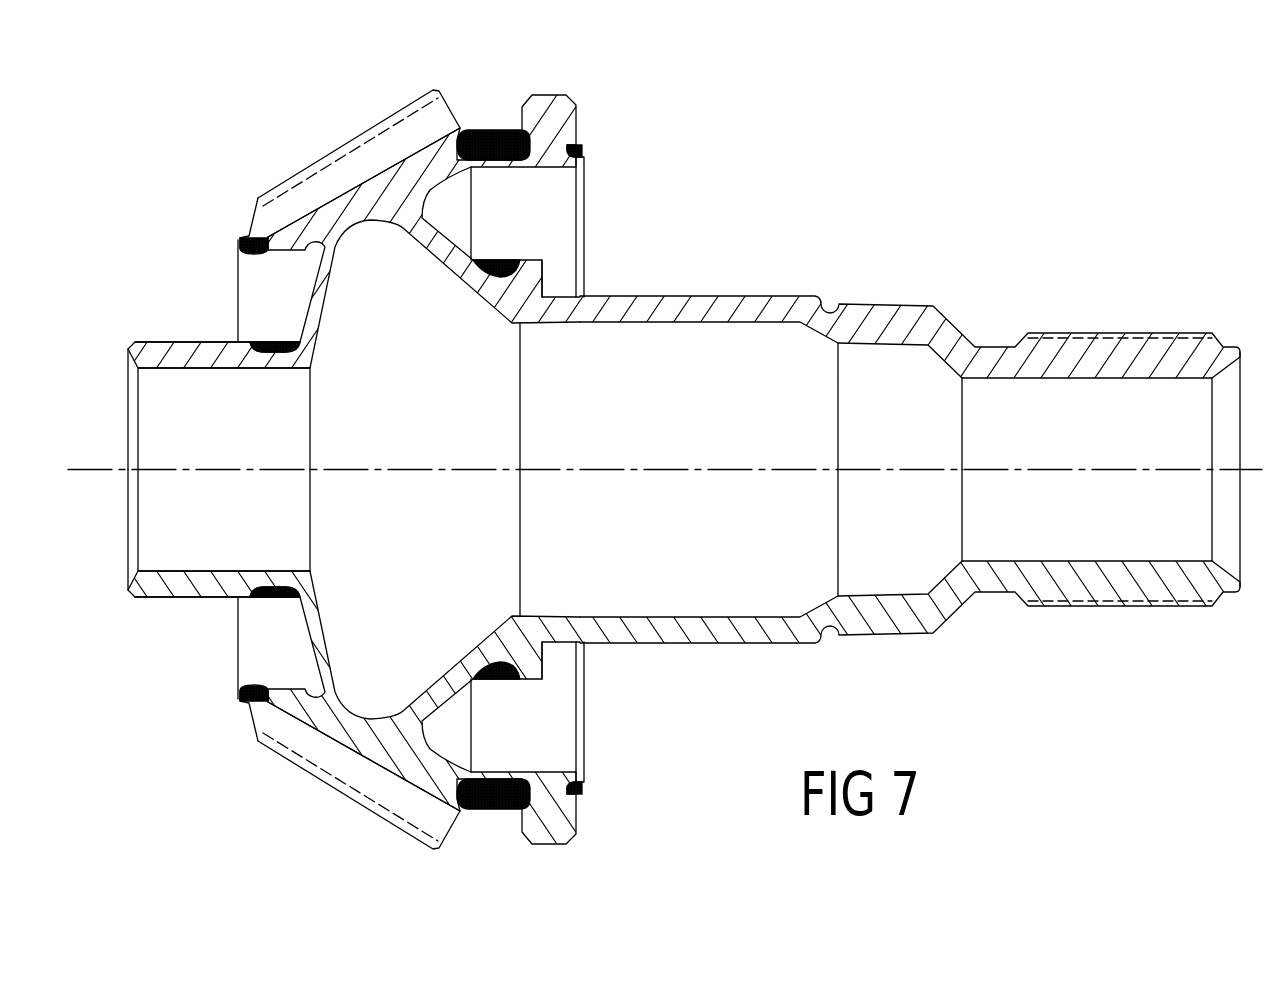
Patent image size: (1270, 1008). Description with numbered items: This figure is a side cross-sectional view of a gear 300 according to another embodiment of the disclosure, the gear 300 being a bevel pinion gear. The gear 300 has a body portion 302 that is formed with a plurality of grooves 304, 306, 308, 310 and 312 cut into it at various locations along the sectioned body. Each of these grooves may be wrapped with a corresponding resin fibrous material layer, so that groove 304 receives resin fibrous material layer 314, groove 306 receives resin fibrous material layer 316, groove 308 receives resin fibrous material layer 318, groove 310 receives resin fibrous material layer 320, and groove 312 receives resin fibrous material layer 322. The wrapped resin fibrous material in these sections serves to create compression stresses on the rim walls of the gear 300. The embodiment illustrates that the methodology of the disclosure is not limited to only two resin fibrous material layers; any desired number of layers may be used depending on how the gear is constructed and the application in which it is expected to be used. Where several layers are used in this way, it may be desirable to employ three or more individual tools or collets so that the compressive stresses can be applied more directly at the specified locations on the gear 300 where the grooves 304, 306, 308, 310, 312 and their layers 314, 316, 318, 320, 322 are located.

The gear 300 is at (650, 217).
The body portion 302 is at (180, 347).
The groove 304 is at (256, 243).
The groove 306 is at (257, 343).
The groove 308 is at (503, 128).
The groove 310 is at (510, 263).
The groove 312 is at (582, 150).
The resin fibrous material layer 314 is at (257, 247).
The resin fibrous material layer 316 is at (278, 343).
The resin fibrous material layer 318 is at (487, 130).
The resin fibrous material layer 320 is at (497, 260).
The resin fibrous material layer 322 is at (572, 143).